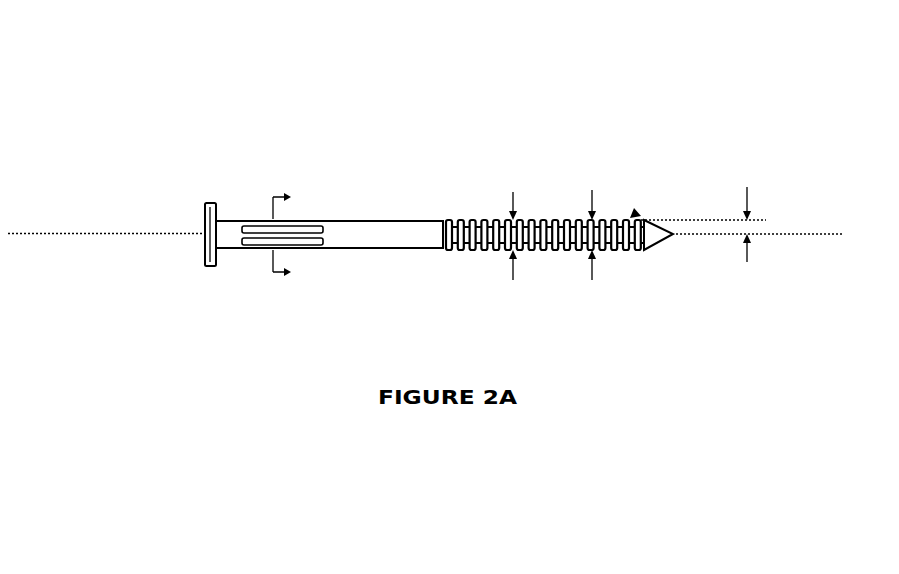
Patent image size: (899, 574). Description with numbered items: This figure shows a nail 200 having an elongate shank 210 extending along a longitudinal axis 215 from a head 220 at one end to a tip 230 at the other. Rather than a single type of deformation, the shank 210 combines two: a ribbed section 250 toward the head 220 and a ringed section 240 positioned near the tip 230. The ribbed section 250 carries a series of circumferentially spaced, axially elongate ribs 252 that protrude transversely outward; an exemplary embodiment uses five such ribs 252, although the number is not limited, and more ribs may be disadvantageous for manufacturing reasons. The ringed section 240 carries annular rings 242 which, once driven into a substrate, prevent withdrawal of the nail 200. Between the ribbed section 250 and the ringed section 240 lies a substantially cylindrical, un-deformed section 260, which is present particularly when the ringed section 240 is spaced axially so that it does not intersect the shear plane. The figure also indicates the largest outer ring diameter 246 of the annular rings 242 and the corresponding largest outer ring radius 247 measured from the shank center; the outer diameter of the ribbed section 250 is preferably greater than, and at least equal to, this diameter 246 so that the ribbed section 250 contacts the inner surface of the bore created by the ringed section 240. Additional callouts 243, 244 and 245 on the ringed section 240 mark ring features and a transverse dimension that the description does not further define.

The nail 200 is at (128, 118).
The elongate shank 210 is at (459, 102).
The longitudinal axis 215 is at (808, 231).
The head 220 is at (205, 243).
The tip 230 is at (658, 240).
The ringed section 240 is at (642, 267).
The annular rings 242 is at (634, 215).
The thread crest 243 is at (478, 222).
The major diameter 244 is at (534, 229).
The thread root 245 is at (476, 222).
The largest outer ring diameter 246 is at (613, 229).
The largest outer ring radius 247 is at (768, 219).
The ribbed section 250 is at (323, 267).
The axially elongate ribs 252 is at (244, 214).
The substantially cylindrical section 260 is at (435, 267).